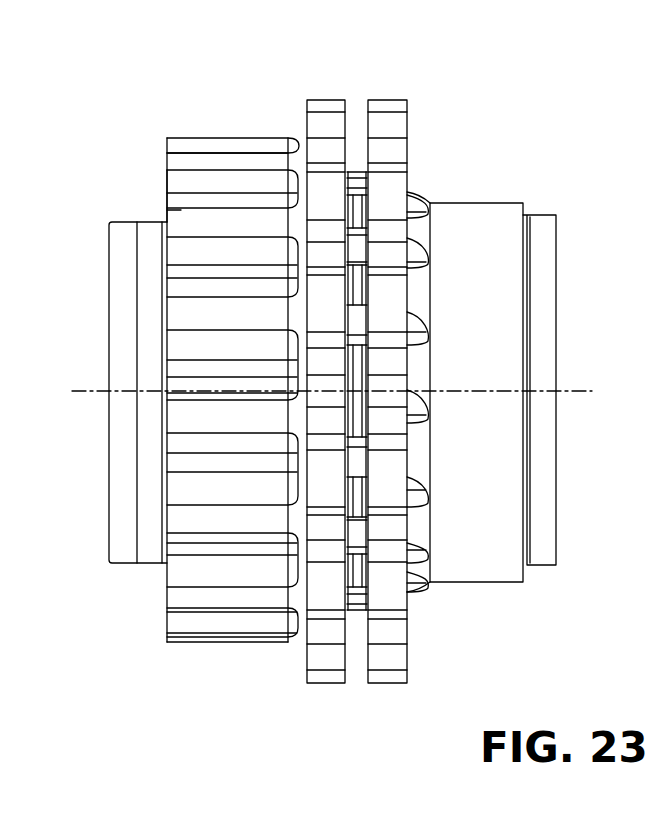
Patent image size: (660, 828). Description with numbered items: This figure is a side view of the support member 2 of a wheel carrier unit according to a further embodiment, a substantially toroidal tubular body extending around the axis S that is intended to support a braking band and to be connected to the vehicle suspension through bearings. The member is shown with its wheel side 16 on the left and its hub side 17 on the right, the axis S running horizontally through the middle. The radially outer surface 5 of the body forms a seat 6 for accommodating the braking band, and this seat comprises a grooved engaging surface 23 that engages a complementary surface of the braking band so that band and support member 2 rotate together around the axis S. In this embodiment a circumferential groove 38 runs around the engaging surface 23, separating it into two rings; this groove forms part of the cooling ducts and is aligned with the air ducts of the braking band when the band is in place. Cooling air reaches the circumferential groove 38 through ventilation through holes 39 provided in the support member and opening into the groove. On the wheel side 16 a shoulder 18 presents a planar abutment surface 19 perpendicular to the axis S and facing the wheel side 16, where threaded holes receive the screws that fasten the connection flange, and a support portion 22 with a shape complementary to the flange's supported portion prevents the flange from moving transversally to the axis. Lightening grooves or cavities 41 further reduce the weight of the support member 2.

The support member 2 is at (483, 110).
The radially outer surface 5 is at (262, 137).
The seat 6 is at (378, 107).
The wheel side 16 is at (78, 364).
The hub side 17 is at (634, 441).
The shoulder 18 is at (163, 163).
The planar abutment surface 19 is at (163, 190).
The support portion 22 is at (148, 550).
The engaging surface 23 is at (328, 662).
The circumferential groove 38 is at (353, 120).
The ventilation through holes 39 is at (410, 422).
The lightening grooves or cavities 41 is at (212, 563).